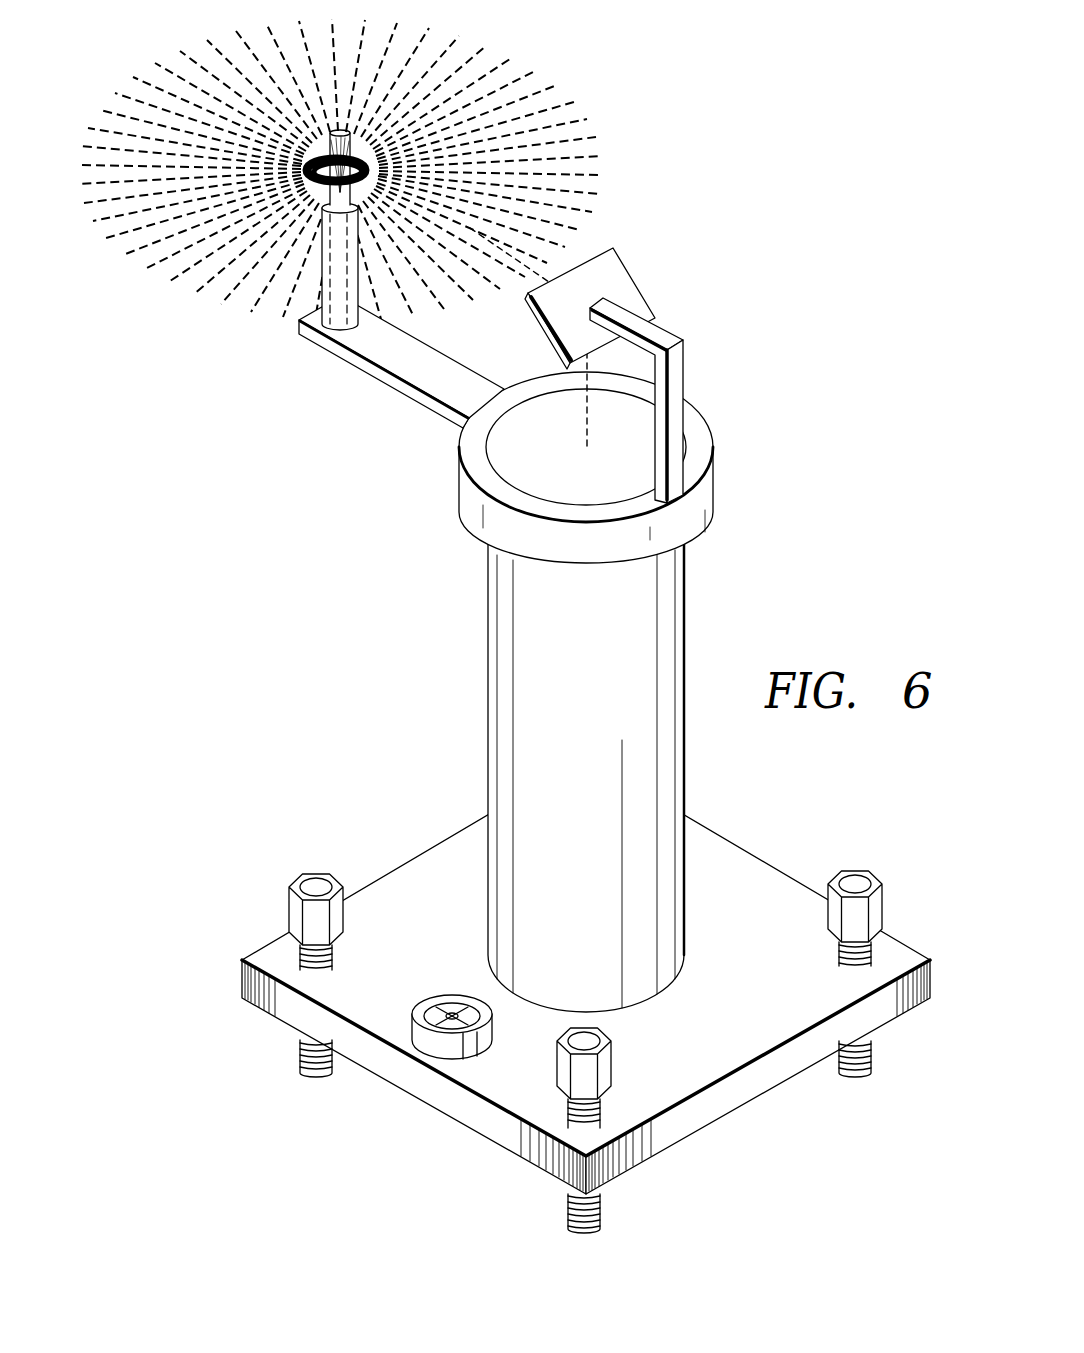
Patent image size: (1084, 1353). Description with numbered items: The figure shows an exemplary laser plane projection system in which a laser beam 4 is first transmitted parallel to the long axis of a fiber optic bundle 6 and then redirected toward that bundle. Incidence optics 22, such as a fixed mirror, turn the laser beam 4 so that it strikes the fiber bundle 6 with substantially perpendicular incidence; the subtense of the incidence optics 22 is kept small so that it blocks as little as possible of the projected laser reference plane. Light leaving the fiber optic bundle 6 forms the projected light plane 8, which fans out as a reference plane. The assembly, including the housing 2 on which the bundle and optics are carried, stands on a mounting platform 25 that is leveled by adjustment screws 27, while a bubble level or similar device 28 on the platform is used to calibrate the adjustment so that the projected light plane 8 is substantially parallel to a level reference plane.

The housing 2 is at (680, 582).
The laser beam 4 is at (576, 406).
The fiber optic bundle 6 is at (333, 326).
The projected light plane 8 is at (558, 70).
The incidence optics 22 is at (628, 280).
The mounting platform 25 is at (758, 866).
The adjustment screws 27 is at (880, 906).
The bubble level 28 is at (434, 1001).